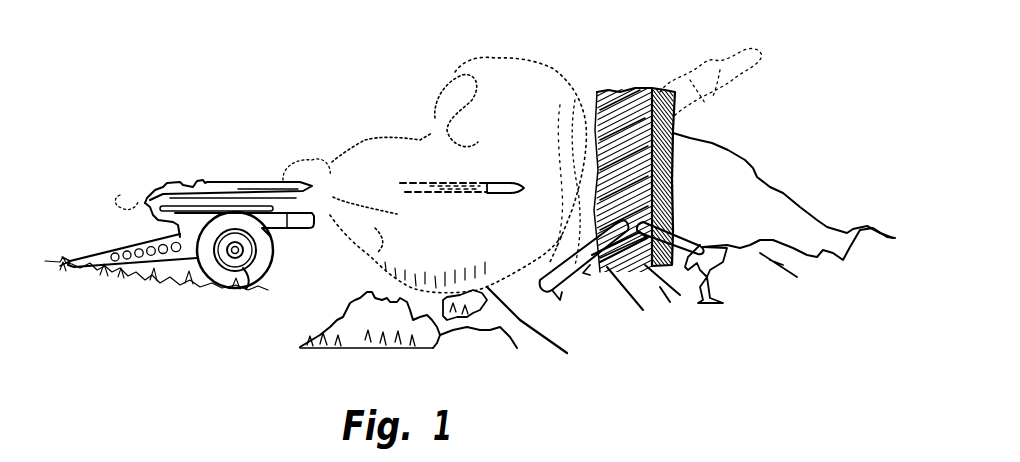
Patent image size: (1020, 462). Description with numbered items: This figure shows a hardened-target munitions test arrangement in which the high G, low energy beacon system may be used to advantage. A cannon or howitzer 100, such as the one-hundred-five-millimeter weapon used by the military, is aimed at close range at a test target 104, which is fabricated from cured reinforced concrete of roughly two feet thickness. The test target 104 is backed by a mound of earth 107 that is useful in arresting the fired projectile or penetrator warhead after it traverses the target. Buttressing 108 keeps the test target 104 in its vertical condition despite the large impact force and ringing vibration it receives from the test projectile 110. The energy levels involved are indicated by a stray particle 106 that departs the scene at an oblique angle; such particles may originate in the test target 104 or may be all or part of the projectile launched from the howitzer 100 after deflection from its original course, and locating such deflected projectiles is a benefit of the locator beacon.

The cannon or howitzer 100 is at (235, 182).
The test target 104 is at (620, 86).
The stray particle 106 is at (758, 52).
The mound of earth 107 is at (753, 166).
The buttressing 108 is at (640, 324).
The test projectile 110 is at (503, 178).